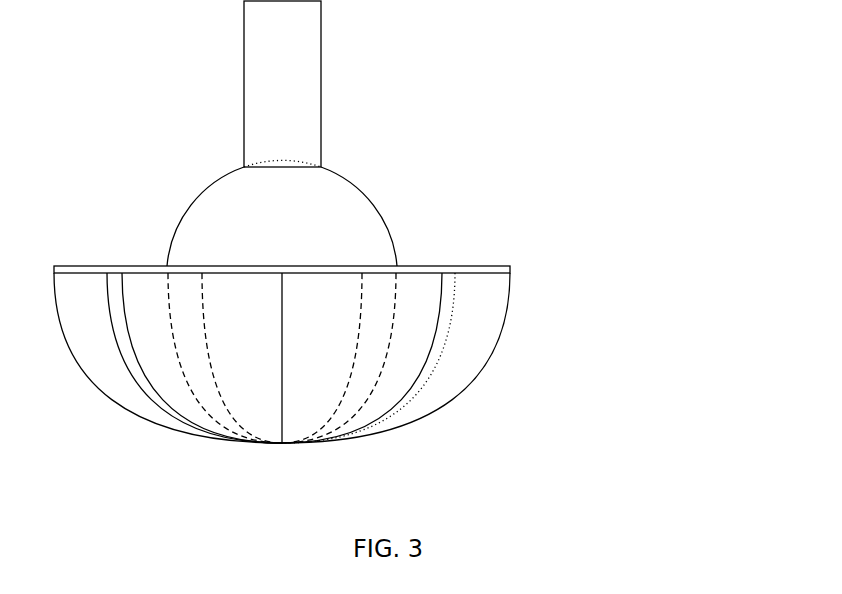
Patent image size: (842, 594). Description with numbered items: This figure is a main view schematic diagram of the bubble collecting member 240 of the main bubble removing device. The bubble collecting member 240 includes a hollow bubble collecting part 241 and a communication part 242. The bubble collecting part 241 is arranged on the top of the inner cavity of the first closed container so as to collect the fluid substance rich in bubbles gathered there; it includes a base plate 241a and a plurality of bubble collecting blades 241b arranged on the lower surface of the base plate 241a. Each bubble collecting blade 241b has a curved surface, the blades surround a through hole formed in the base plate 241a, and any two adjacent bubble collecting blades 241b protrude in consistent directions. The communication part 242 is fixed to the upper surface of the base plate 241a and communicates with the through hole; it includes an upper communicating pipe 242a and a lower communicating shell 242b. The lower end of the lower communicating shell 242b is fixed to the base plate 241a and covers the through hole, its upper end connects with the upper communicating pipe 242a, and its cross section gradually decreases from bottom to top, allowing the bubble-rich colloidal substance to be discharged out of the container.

The bubble collecting member 240 is at (361, 254).
The bubble collecting part 241 is at (361, 344).
The base plate 241a is at (488, 270).
The bubble collecting blades 241b is at (462, 335).
The communication part 242 is at (340, 133).
The upper communicating pipe 242a is at (298, 82).
The lower communicating shell 242b is at (338, 198).